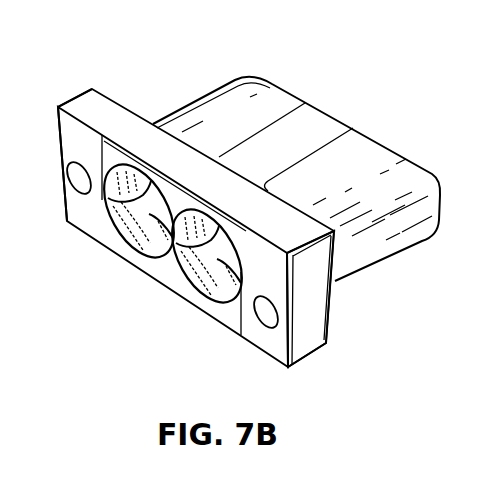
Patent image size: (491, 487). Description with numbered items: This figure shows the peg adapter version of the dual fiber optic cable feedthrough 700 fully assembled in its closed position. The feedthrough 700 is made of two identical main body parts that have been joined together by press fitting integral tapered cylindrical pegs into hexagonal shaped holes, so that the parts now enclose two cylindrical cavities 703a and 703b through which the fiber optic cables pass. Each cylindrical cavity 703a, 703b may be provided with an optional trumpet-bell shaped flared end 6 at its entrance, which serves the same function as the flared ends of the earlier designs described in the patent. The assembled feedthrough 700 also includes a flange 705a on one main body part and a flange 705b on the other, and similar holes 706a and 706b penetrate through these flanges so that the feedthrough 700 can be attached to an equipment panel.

The dual fiber optic cable feedthrough 700 is at (451, 52).
The flange 705a is at (60, 147).
The flange 705b is at (307, 300).
The hole 706a is at (82, 191).
The hole 706b is at (268, 323).
The cylindrical cavity 703a is at (155, 212).
The cylindrical cavity 703b is at (223, 258).
The trumpet-bell shaped flared end 6 is at (128, 236).